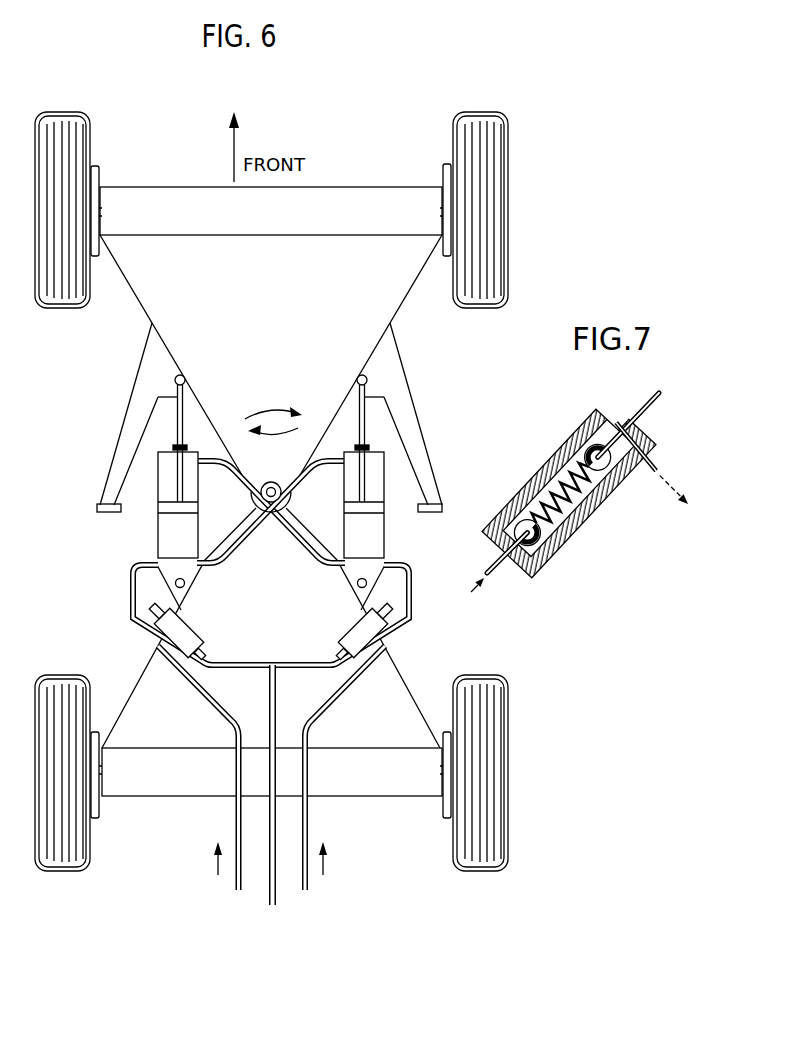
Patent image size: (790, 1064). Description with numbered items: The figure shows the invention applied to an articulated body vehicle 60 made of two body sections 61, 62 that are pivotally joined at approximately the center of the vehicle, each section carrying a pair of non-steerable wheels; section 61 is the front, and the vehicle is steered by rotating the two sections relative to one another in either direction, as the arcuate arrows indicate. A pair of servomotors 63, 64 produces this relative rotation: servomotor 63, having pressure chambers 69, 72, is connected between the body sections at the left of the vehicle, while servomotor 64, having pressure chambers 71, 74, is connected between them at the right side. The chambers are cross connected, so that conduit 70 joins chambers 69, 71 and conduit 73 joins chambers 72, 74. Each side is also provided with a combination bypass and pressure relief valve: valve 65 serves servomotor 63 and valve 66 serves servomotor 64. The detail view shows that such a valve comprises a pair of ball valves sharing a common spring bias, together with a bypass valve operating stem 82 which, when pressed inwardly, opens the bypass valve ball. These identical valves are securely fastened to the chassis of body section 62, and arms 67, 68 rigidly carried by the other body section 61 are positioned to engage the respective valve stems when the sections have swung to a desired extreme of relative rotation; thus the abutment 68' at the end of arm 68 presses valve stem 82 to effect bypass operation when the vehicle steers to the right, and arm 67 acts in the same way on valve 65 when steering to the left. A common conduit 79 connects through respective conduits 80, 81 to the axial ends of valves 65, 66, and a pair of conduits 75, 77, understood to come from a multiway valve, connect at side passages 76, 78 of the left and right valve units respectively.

In FIG. 6, the articulated body vehicle 60 is at (517, 319).
In FIG. 6, the body section 61 is at (165, 202).
In FIG. 6, the body section 62 is at (163, 787).
In FIG. 6, the servomotor 63 is at (94, 531).
In FIG. 6, the servomotor 64 is at (458, 469).
In FIG. 6, the valve 65 is at (152, 643).
In FIG. 6, the valve 66 is at (354, 637).
In FIG. 7, the valve 66 is at (588, 548).
In FIG. 6, the arm 67 is at (138, 422).
In FIG. 6, the arm 68 is at (445, 414).
In FIG. 6, the abutment 68' is at (437, 526).
In FIG. 6, the pressure chamber 69 is at (160, 477).
In FIG. 6, the conduit 70 is at (206, 456).
In FIG. 6, the pressure chamber 71 is at (364, 528).
In FIG. 6, the pressure chamber 72 is at (160, 550).
In FIG. 6, the conduit 73 is at (335, 456).
In FIG. 6, the pressure chamber 74 is at (372, 463).
In FIG. 6, the conduit 75 is at (238, 870).
In FIG. 6, the side passage 76 is at (131, 623).
In FIG. 6, the conduit 77 is at (306, 866).
In FIG. 6, the side passage 78 is at (390, 625).
In FIG. 7, the side passage 78 is at (640, 463).
In FIG. 6, the common conduit 79 is at (274, 884).
In FIG. 6, the conduit 80 is at (206, 656).
In FIG. 6, the conduit 81 is at (336, 656).
In FIG. 7, the conduit 81 is at (493, 565).
In FIG. 6, the bypass valve operating stem 82 is at (378, 605).
In FIG. 7, the bypass valve operating stem 82 is at (652, 407).